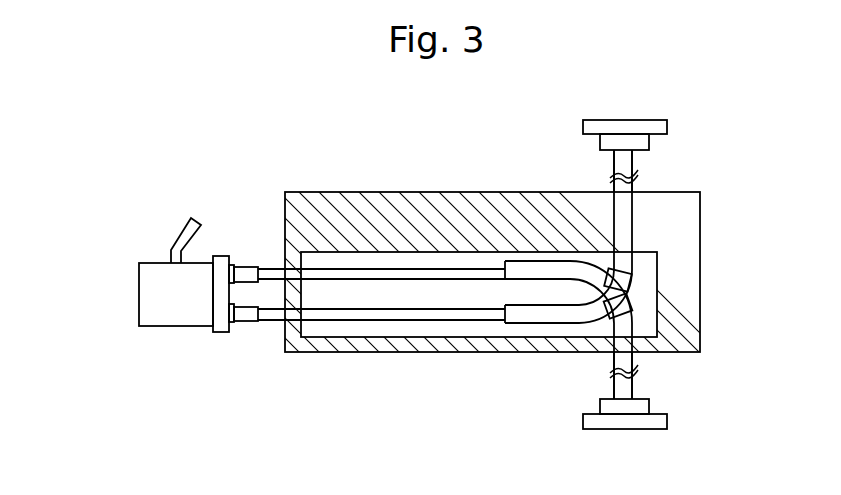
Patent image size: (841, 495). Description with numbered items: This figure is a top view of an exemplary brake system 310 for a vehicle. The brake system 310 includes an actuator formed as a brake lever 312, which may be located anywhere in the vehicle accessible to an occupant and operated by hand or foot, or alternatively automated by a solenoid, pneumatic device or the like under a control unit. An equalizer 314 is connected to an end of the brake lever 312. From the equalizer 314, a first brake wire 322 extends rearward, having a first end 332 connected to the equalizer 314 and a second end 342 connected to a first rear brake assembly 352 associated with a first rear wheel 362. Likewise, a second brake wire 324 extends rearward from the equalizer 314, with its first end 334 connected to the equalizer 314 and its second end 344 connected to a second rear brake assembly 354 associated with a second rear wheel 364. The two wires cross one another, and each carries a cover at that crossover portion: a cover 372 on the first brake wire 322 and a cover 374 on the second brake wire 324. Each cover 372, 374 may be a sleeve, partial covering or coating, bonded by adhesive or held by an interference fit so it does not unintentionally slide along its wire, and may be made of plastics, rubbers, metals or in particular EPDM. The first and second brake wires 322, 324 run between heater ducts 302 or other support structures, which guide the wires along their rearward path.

The heater ducts 302 is at (454, 212).
The brake system 310 is at (151, 296).
The brake lever 312 is at (162, 301).
The equalizer 314 is at (220, 330).
The first brake wire 322 is at (413, 313).
The second brake wire 324 is at (398, 276).
The first end 332 is at (247, 330).
The first end 334 is at (247, 258).
The second end 342 is at (638, 180).
The second end 344 is at (638, 363).
The first rear brake assembly 352 is at (632, 140).
The second rear brake assembly 354 is at (632, 408).
The first rear wheel 362 is at (610, 125).
The second rear wheel 364 is at (610, 424).
The cover 372 is at (624, 287).
The cover 374 is at (624, 304).